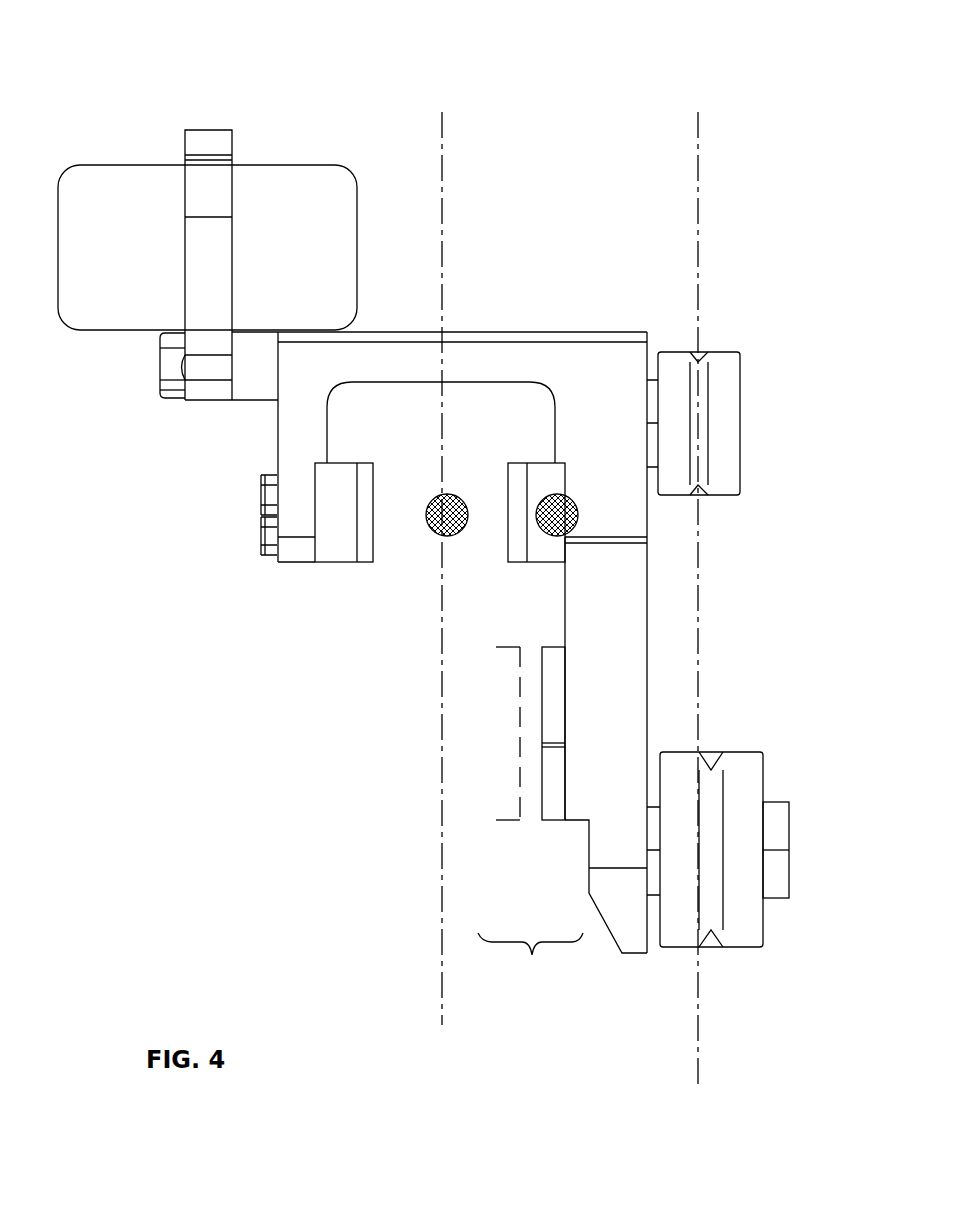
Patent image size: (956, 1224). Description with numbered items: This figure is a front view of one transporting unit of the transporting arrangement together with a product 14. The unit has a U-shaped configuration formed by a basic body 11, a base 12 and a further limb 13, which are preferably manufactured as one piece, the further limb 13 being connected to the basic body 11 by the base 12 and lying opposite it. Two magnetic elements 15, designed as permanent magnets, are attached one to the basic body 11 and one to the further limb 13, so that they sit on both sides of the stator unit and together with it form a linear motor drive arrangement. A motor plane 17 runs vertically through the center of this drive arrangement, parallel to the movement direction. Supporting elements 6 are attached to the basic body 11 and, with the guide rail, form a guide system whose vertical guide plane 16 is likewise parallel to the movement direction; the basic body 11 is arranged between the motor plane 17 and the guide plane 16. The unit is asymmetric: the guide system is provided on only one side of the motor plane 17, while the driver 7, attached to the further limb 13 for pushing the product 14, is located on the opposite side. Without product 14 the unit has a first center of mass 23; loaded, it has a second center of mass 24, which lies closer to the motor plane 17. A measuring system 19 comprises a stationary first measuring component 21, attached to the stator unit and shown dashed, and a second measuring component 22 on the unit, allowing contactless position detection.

The supporting element 6 is at (722, 387).
The driver 7 is at (207, 140).
The basic body 11 is at (623, 695).
The base 12 is at (488, 352).
The further limb 13 is at (296, 438).
The product 14 is at (293, 193).
The magnetic element 15 is at (338, 542).
The guide plane 16 is at (698, 135).
The motor plane 17 is at (442, 135).
The measuring system 19 is at (532, 958).
The first measuring component 21 is at (510, 805).
The second measuring component 22 is at (552, 805).
The first center of mass 23 is at (577, 505).
The second center of mass 24 is at (437, 497).